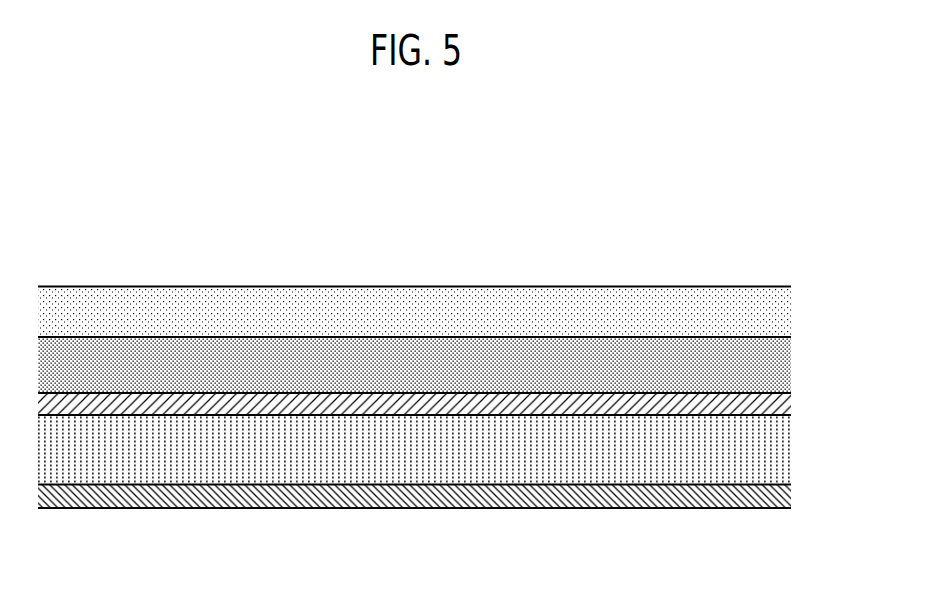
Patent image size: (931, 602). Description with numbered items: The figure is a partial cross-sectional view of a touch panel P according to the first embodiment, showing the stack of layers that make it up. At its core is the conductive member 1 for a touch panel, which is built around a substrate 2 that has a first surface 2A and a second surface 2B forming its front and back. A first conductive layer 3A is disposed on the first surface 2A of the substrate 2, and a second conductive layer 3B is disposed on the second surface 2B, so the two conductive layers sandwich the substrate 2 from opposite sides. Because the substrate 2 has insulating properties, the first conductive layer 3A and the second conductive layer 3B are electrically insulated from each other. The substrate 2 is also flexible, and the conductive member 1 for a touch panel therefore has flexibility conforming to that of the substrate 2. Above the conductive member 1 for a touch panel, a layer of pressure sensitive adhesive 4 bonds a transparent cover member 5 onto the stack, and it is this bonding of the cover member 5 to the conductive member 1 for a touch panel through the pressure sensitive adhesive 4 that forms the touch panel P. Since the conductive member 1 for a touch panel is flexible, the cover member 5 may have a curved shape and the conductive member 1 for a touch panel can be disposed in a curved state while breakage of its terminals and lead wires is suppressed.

The touch panel P is at (708, 235).
The conductive member for a touch panel 1 is at (807, 394).
The substrate 2 is at (213, 453).
The first surface 2A is at (153, 408).
The second surface 2B is at (294, 490).
The first conductive layer 3A is at (383, 407).
The second conductive layer 3B is at (475, 497).
The pressure sensitive adhesive 4 is at (250, 362).
The cover member 5 is at (367, 312).